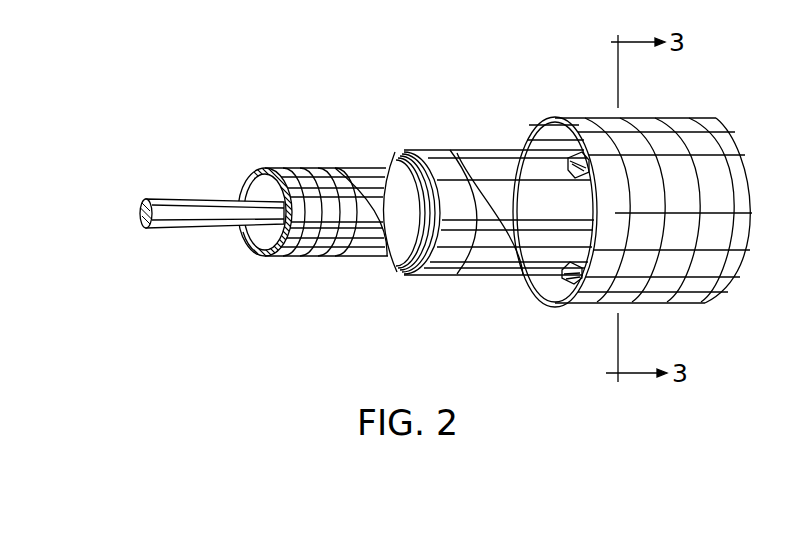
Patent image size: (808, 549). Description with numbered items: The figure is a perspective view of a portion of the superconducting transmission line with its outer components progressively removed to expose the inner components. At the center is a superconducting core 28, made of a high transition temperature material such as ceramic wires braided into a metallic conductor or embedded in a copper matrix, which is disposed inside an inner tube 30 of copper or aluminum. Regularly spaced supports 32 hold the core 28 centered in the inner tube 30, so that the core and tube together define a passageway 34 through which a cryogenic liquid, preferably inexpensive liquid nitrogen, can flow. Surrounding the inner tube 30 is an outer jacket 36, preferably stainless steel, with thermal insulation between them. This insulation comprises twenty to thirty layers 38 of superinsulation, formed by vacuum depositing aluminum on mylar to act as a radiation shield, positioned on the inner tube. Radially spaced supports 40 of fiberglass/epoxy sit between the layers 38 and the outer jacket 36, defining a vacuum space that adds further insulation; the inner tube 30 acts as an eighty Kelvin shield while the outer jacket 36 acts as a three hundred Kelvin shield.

The superconducting core 28 is at (173, 229).
The inner tube 30 is at (258, 259).
The supports 32 is at (243, 180).
The passageway 34 is at (240, 242).
The outer jacket 36 is at (663, 118).
The layers 38 is at (396, 278).
The supports 40 is at (548, 145).